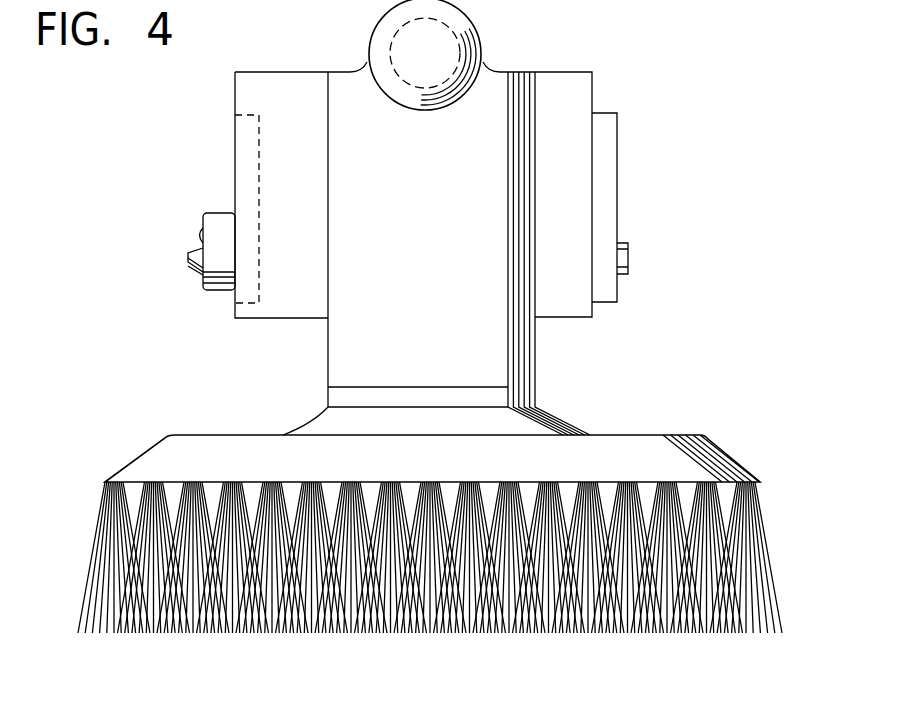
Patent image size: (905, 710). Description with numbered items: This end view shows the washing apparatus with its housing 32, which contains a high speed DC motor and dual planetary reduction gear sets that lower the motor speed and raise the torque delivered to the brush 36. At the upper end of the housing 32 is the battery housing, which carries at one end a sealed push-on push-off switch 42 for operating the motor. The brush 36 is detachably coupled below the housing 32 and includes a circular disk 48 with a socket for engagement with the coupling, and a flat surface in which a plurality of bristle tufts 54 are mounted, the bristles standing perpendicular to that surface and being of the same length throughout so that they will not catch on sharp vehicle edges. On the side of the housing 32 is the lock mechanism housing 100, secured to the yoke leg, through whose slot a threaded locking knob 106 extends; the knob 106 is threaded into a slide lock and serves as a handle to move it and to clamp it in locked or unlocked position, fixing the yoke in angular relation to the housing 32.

The housing 32 is at (290, 321).
The brush 36 is at (635, 433).
The push-on push-off switch 42 is at (462, 32).
The circular disk 48 is at (672, 450).
The bristle tufts 54 is at (748, 557).
The housing 100 is at (215, 213).
The threaded locking knob 106 is at (188, 253).